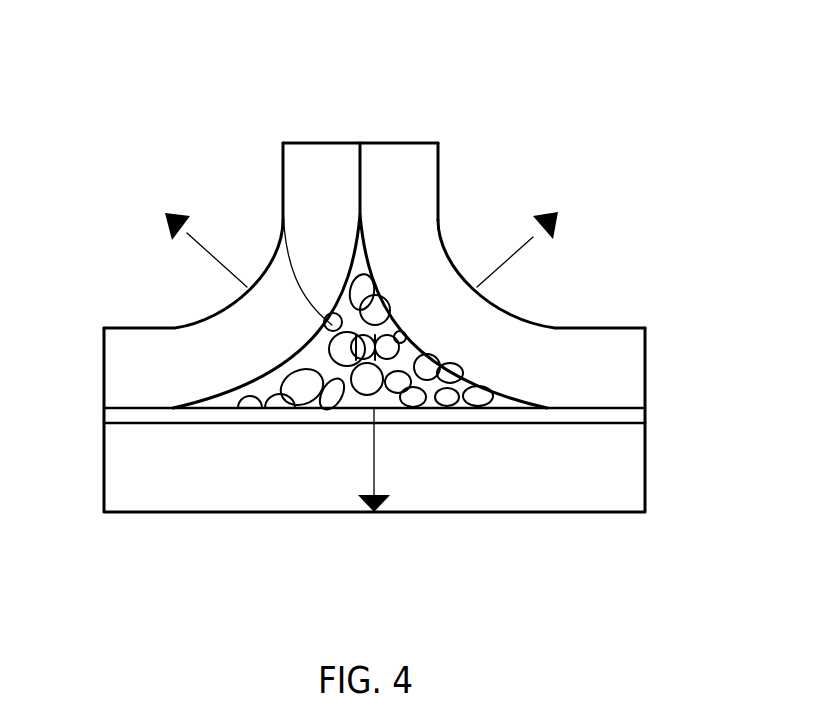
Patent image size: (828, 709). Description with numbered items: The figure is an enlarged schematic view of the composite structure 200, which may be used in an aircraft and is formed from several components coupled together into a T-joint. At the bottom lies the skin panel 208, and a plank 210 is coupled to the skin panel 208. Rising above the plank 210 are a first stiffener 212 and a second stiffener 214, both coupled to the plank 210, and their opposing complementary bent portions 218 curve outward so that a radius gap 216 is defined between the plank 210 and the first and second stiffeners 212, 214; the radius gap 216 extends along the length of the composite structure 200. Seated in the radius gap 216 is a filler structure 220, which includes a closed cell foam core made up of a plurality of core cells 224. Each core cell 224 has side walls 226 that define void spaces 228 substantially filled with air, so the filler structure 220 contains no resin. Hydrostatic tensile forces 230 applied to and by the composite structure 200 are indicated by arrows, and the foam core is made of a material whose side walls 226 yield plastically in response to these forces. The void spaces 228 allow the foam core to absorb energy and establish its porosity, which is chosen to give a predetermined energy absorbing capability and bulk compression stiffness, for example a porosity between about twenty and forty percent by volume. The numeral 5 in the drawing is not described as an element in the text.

The composite structure 200 is at (138, 118).
The first stiffener 212 is at (318, 152).
The second stiffener 214 is at (415, 152).
The bent portions 218 is at (218, 338).
The skin panel 208 is at (630, 482).
The plank 210 is at (630, 415).
The radius gap 216 is at (349, 424).
The side walls 226 is at (372, 268).
The core cells 224 is at (300, 362).
The void spaces 228 is at (330, 395).
The porous material 5 is at (407, 330).
The filler structure 220 is at (489, 430).
The hydrostatic tensile forces 230 is at (190, 240).